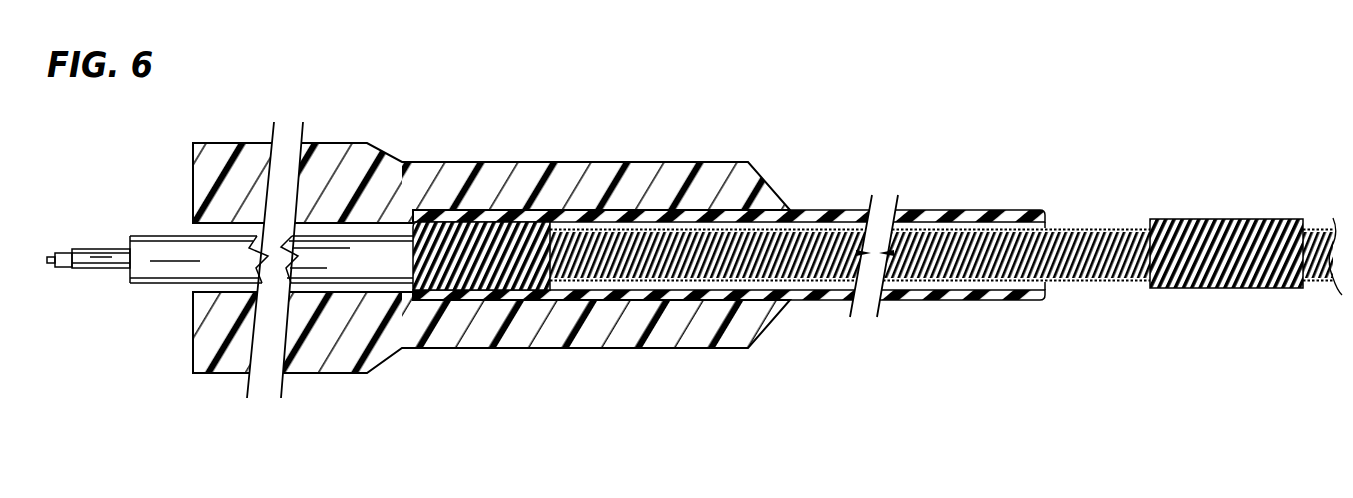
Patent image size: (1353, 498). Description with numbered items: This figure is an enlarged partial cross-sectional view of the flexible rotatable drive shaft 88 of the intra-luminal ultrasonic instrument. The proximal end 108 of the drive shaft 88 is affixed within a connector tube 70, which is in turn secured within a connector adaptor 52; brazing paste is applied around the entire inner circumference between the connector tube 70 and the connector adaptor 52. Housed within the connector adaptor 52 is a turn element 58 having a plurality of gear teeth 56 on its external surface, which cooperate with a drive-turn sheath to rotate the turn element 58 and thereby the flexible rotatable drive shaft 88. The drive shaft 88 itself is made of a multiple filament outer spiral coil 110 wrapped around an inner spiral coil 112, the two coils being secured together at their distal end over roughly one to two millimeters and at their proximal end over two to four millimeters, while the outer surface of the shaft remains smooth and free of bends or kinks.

The connector adaptor 52 is at (322, 150).
The gear teeth 56 is at (150, 286).
The turn element 58 is at (173, 245).
The connector tube 70 is at (813, 212).
The flexible rotatable drive shaft 88 is at (845, 216).
The proximal end 108 is at (593, 245).
The outer spiral coil 110 is at (479, 258).
The inner spiral coil 112 is at (1060, 287).